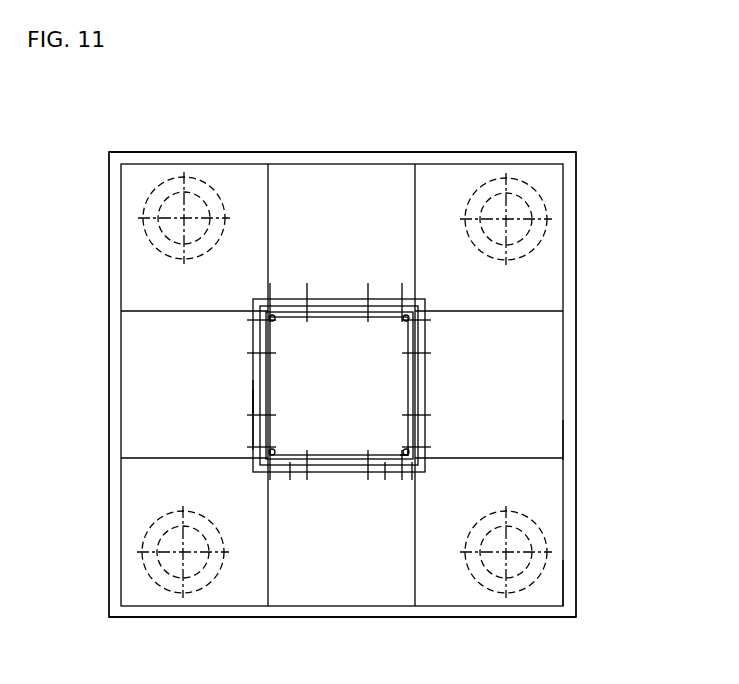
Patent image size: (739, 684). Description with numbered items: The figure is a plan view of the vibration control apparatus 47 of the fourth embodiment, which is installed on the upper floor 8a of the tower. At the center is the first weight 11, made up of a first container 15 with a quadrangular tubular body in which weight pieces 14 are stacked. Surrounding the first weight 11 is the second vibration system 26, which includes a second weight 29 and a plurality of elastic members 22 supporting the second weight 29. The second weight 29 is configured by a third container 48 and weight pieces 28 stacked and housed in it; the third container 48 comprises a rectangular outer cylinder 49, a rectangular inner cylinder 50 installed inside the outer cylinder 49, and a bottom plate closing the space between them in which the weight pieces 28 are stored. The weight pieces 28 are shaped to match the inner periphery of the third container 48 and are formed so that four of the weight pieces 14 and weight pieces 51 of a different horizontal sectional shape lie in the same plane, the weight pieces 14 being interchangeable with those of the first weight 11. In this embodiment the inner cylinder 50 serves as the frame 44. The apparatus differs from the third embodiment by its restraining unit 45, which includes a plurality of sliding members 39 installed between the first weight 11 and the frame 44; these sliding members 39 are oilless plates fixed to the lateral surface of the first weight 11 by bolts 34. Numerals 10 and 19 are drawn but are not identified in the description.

The upper floor 8a is at (590, 587).
The column base 10 is at (322, 292).
The first weight 11 is at (348, 327).
The weight pieces 14 is at (329, 220).
The first container 15 is at (338, 478).
The outer frame 19 is at (418, 298).
The elastic members 22 is at (134, 192).
The second vibration system 26 is at (593, 350).
The weight pieces 28 is at (455, 147).
The second weight 29 is at (552, 410).
The bolts 34 is at (258, 322).
The sliding members 39 is at (422, 338).
The frame 44 is at (228, 402).
The restraining unit 45 is at (163, 383).
The vibration control apparatus 47 is at (547, 108).
The third container 48 is at (588, 486).
The outer cylinder 49 is at (567, 440).
The inner cylinder 50 is at (428, 466).
The weight pieces 51 is at (134, 300).